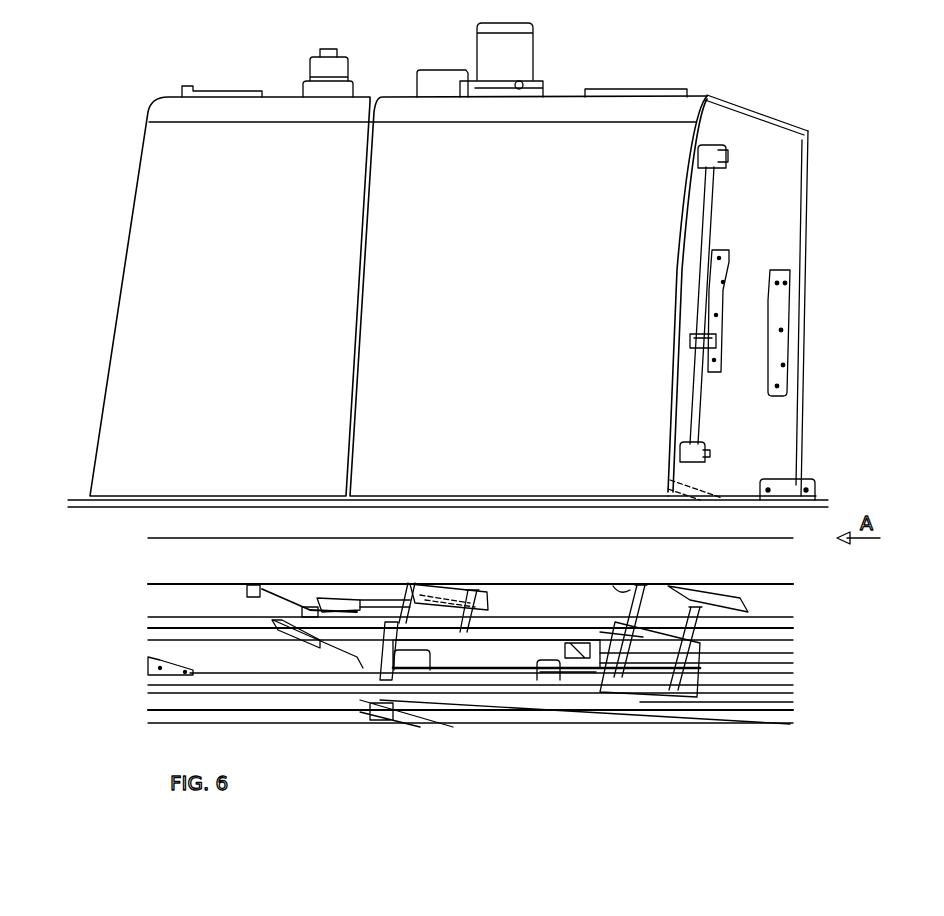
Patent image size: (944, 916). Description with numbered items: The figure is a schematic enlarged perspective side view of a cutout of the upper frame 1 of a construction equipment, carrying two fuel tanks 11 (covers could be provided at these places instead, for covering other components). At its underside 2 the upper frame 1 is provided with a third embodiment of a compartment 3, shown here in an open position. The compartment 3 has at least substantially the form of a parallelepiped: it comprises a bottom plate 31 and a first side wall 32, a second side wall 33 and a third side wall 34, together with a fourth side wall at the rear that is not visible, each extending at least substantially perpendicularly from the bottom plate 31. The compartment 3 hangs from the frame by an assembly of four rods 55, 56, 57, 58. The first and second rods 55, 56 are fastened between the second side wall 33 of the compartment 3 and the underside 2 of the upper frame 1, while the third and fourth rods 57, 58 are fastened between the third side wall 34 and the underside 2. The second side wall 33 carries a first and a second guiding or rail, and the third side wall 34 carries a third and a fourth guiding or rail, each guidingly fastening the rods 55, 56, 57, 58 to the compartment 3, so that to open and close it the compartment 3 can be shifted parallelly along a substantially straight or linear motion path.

The upper frame 1 is at (120, 73).
The underside 2 is at (170, 553).
The compartment 3 is at (592, 745).
The fuel tank 11 is at (232, 308).
The bottom plate 31 is at (541, 698).
The first side wall 32 is at (518, 662).
The second side wall 33 is at (390, 667).
The third side wall 34 is at (674, 664).
The first rod 55 is at (413, 602).
The second rod 56 is at (470, 612).
The third rod 57 is at (645, 670).
The fourth rod 58 is at (710, 670).